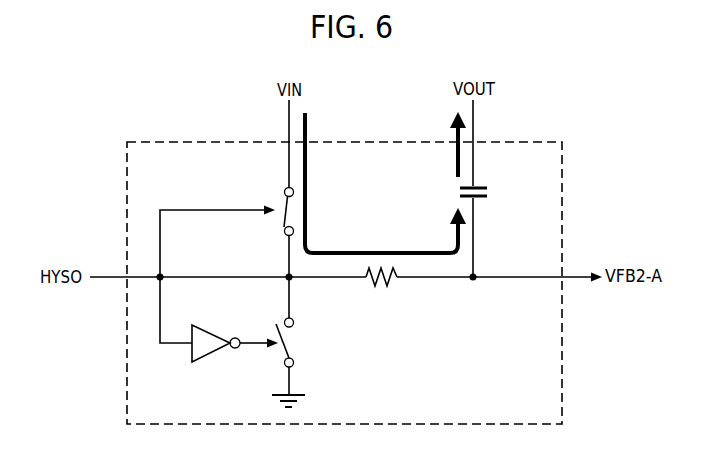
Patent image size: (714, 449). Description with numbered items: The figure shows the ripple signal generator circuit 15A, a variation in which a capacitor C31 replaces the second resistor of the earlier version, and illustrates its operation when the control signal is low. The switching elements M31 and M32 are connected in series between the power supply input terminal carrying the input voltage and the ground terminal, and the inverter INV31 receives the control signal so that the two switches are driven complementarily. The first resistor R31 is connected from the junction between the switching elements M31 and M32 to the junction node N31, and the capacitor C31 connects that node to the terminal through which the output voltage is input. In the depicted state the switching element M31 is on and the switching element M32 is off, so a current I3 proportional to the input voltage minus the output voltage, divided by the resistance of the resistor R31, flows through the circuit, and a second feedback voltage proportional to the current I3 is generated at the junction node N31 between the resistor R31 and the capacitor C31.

The ripple signal generator circuit 15A is at (192, 143).
The switching element M31 is at (251, 233).
The switching element M32 is at (301, 342).
The inverter INV31 is at (207, 354).
The first resistor R31 is at (393, 283).
The capacitor C31 is at (487, 197).
The junction node N31 is at (479, 287).
The current I3 is at (400, 251).